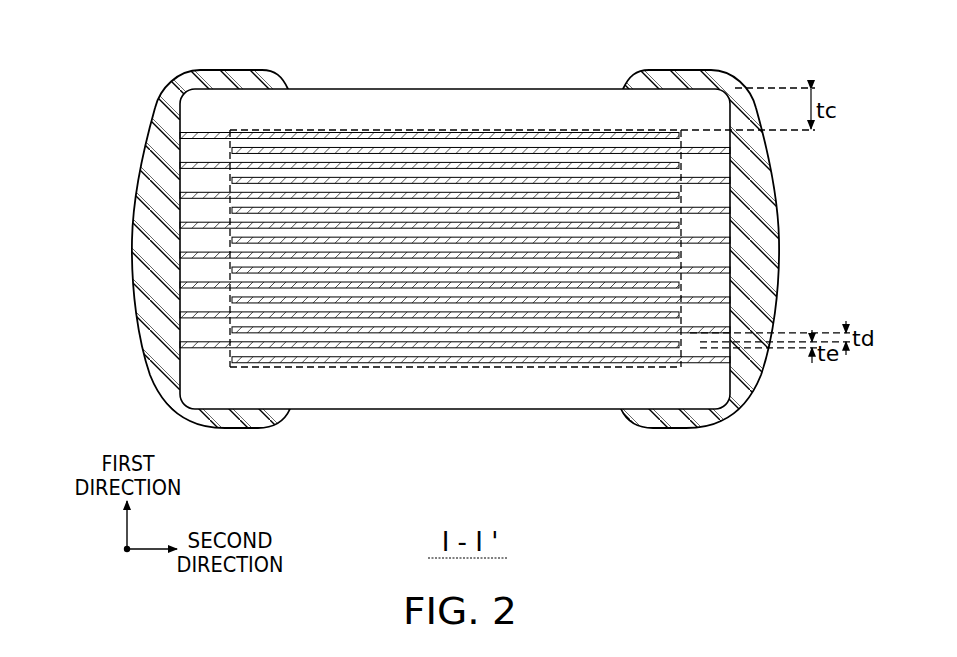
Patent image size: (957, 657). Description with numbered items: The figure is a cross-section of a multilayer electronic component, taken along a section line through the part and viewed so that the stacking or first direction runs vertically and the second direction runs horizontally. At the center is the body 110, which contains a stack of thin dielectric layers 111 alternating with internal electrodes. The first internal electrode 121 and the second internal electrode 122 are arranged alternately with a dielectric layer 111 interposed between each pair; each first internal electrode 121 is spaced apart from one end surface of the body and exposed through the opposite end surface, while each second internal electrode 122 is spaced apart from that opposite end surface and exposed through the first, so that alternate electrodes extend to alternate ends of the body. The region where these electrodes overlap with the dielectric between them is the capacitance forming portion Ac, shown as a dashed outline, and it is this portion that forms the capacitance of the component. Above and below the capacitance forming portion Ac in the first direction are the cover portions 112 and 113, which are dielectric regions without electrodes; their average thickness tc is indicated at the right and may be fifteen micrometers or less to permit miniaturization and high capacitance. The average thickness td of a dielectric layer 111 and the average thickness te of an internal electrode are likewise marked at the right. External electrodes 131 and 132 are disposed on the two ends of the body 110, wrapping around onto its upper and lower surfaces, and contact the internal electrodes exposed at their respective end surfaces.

The body 110 is at (400, 88).
The dielectric layer 111 is at (345, 158).
The cover portion 112 is at (458, 100).
The cover portion 113 is at (423, 400).
The first internal electrode 121 is at (530, 135).
The second internal electrode 122 is at (549, 152).
The external electrode 131 is at (137, 225).
The external electrode 132 is at (778, 226).
The capacitance forming portion Ac is at (509, 368).